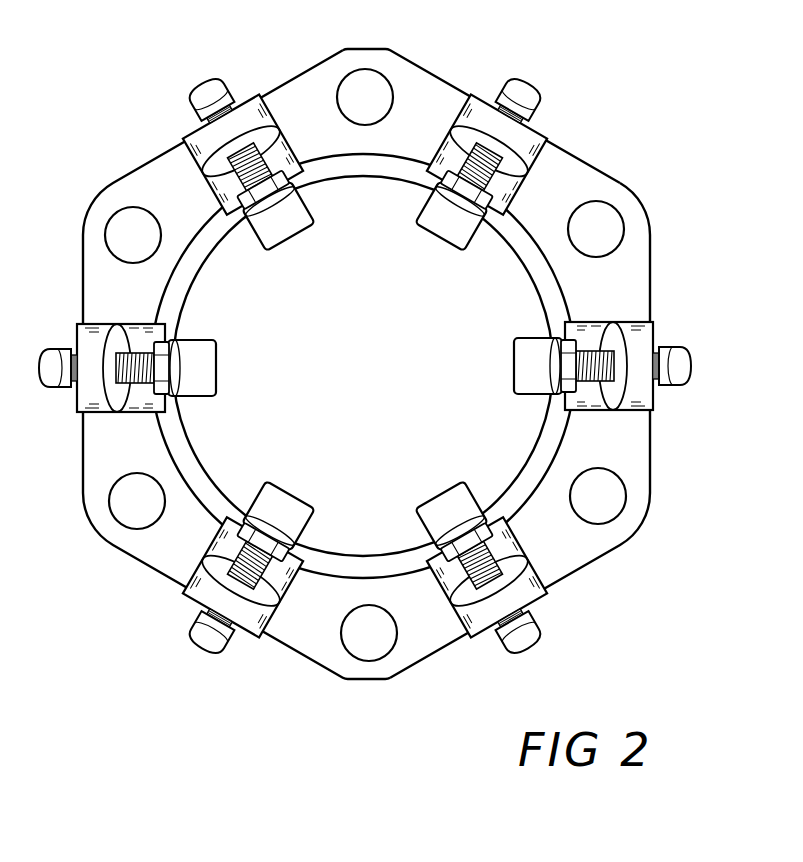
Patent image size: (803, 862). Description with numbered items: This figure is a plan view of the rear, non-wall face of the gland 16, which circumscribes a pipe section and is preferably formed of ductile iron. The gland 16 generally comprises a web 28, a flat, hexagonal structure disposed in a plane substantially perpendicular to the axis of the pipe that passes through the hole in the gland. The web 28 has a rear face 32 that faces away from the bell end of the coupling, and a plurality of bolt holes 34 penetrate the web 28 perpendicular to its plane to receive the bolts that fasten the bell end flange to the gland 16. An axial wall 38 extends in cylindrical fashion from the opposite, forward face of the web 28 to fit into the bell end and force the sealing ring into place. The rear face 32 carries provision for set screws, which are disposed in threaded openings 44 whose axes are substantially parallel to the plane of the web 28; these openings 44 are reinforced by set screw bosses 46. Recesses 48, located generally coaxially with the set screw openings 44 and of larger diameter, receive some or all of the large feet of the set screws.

The gland 16 is at (435, 77).
The web 28 is at (555, 190).
The rear face 32 is at (608, 275).
The bolt holes 34 is at (598, 497).
The axial wall 38 is at (548, 437).
The threaded openings 44 is at (233, 570).
The set screw bosses 46 is at (245, 613).
The recesses 48 is at (523, 552).